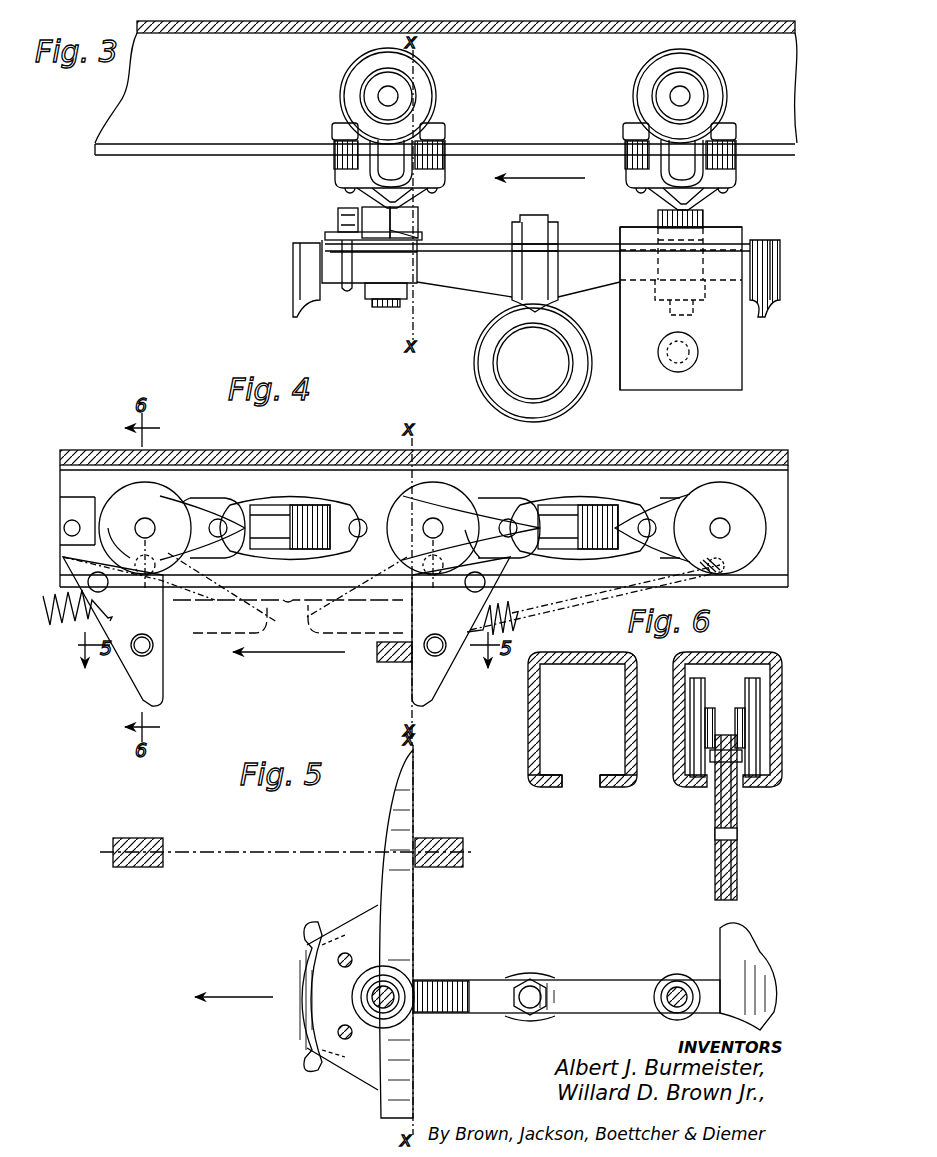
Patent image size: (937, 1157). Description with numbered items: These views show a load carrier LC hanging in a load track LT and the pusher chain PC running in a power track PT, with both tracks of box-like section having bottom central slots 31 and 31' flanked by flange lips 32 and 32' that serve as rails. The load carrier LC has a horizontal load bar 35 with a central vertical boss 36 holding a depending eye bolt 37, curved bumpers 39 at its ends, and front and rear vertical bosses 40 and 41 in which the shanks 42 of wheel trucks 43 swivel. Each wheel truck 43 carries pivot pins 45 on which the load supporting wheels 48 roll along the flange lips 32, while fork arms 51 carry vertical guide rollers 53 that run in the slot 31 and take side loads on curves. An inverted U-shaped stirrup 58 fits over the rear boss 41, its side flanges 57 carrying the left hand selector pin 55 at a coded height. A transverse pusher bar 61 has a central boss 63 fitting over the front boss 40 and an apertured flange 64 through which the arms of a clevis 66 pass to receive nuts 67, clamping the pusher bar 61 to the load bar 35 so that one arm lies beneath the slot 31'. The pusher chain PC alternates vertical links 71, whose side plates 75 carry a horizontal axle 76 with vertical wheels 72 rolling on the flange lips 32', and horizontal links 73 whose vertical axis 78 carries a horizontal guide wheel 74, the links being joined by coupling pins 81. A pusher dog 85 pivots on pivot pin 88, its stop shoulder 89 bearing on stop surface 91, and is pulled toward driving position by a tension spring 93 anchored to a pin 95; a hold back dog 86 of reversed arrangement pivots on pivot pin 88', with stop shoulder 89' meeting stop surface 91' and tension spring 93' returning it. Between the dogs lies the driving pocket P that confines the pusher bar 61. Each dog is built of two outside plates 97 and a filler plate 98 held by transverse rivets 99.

In FIG. 3, the central slot 31 is at (445, 165).
In FIG. 6, the central slot 31 is at (582, 795).
In FIG. 6, the flange lips 32 is at (583, 762).
In FIG. 6, the central slot 31' is at (761, 807).
In FIG. 6, the flange lips 32' is at (731, 801).
In FIG. 3, the load bar 35 is at (488, 244).
In FIG. 5, the load bar 35 is at (472, 982).
In FIG. 3, the vertical boss 36 is at (516, 271).
In FIG. 5, the vertical boss 36 is at (534, 978).
In FIG. 3, the eye bolt 37 is at (480, 361).
In FIG. 5, the eye bolt 37 is at (526, 1010).
In FIG. 3, the curved bumpers 39 is at (295, 274).
In FIG. 5, the curved bumpers 39 is at (290, 957).
In FIG. 3, the front vertical boss 40 is at (405, 268).
In FIG. 5, the front vertical boss 40 is at (392, 1018).
In FIG. 3, the rear vertical boss 41 is at (705, 216).
In FIG. 5, the rear vertical boss 41 is at (665, 975).
In FIG. 3, the shanks 42 is at (408, 200).
In FIG. 5, the shanks 42 is at (684, 980).
In FIG. 3, the wheel trucks 43 is at (440, 128).
In FIG. 3, the pivot pins 45 is at (388, 96).
In FIG. 3, the load supporting wheels 48 is at (342, 75).
In FIG. 3, the fork arms 51 is at (334, 128).
In FIG. 3, the vertical guide rollers 53 is at (340, 163).
In FIG. 3, the left hand selector pin 55 is at (679, 370).
In FIG. 3, the side flanges 57 is at (745, 359).
In FIG. 3, the stirrup 58 is at (622, 230).
In FIG. 3, the pusher bar 61 is at (400, 221).
In FIG. 5, the pusher bar 61 is at (395, 806).
In FIG. 3, the central boss 63 is at (368, 212).
In FIG. 5, the central boss 63 is at (400, 975).
In FIG. 3, the apertured flange 64 is at (326, 236).
In FIG. 5, the apertured flange 64 is at (360, 918).
In FIG. 3, the clevis 66 is at (345, 290).
In FIG. 5, the clevis 66 is at (352, 955).
In FIG. 3, the nuts 67 is at (338, 222).
In FIG. 4, the vertical links 71 is at (196, 510).
In FIG. 4, the vertical wheels 72 is at (112, 488).
In FIG. 6, the vertical wheels 72 is at (690, 686).
In FIG. 4, the horizontal links 73 is at (270, 505).
In FIG. 4, the horizontal guide wheel 74 is at (297, 512).
In FIG. 6, the side plates 75 is at (705, 710).
In FIG. 4, the horizontal axle 76 is at (142, 520).
In FIG. 4, the vertical axis 78 is at (245, 565).
In FIG. 4, the coupling pins 81 is at (218, 518).
In FIG. 4, the pusher dog 85 is at (412, 684).
In FIG. 5, the pusher dog 85 is at (453, 838).
In FIG. 4, the hold back dog 86 is at (158, 684).
In FIG. 6, the hold back dog 86 is at (715, 885).
In FIG. 5, the hold back dog 86 is at (137, 838).
In FIG. 4, the pivot pin 88 is at (435, 578).
In FIG. 4, the pivot pin 88' is at (142, 575).
In FIG. 4, the stop shoulder 89 is at (465, 532).
In FIG. 4, the stop shoulder 89' is at (115, 532).
In FIG. 4, the stop surface 91 is at (423, 587).
In FIG. 4, the stop surface 91' is at (153, 584).
In FIG. 4, the tension spring 93 is at (593, 600).
In FIG. 4, the tension spring 93' is at (70, 618).
In FIG. 4, the pin 95 is at (722, 574).
In FIG. 6, the outside plates 97 is at (738, 843).
In FIG. 6, the filler plate 98 is at (738, 866).
In FIG. 6, the transverse rivets 99 is at (715, 835).
In FIG. 3, the load track LT is at (137, 96).
In FIG. 6, the load track LT is at (528, 722).
In FIG. 3, the load carrier LC is at (292, 208).
In FIG. 5, the load carrier LC is at (370, 912).
In FIG. 4, the power track PT is at (80, 455).
In FIG. 6, the power track PT is at (740, 719).
In FIG. 4, the pusher chain PC is at (285, 490).
In FIG. 6, the pusher chain PC is at (740, 690).
In FIG. 4, the driving or control pocket P is at (288, 616).